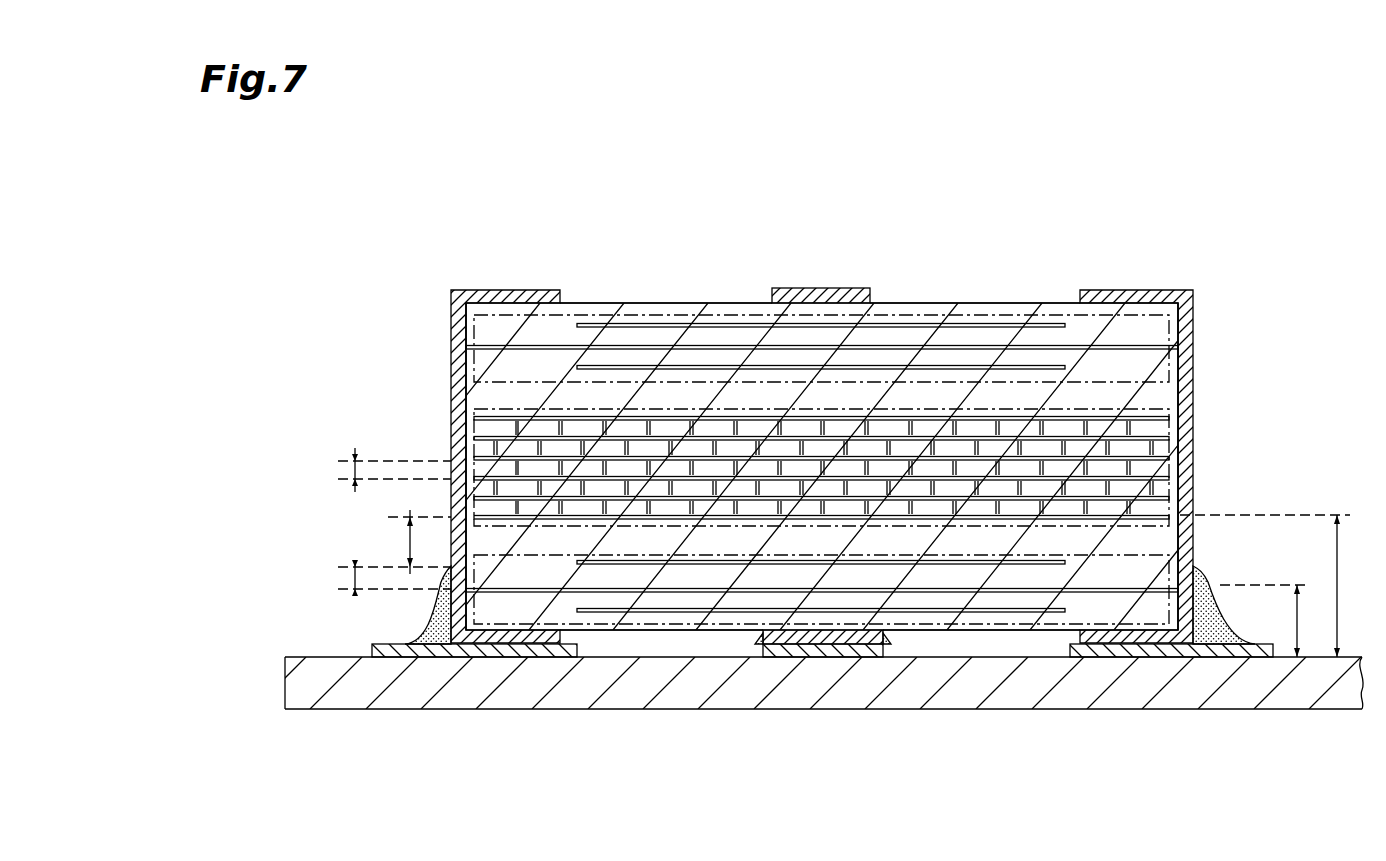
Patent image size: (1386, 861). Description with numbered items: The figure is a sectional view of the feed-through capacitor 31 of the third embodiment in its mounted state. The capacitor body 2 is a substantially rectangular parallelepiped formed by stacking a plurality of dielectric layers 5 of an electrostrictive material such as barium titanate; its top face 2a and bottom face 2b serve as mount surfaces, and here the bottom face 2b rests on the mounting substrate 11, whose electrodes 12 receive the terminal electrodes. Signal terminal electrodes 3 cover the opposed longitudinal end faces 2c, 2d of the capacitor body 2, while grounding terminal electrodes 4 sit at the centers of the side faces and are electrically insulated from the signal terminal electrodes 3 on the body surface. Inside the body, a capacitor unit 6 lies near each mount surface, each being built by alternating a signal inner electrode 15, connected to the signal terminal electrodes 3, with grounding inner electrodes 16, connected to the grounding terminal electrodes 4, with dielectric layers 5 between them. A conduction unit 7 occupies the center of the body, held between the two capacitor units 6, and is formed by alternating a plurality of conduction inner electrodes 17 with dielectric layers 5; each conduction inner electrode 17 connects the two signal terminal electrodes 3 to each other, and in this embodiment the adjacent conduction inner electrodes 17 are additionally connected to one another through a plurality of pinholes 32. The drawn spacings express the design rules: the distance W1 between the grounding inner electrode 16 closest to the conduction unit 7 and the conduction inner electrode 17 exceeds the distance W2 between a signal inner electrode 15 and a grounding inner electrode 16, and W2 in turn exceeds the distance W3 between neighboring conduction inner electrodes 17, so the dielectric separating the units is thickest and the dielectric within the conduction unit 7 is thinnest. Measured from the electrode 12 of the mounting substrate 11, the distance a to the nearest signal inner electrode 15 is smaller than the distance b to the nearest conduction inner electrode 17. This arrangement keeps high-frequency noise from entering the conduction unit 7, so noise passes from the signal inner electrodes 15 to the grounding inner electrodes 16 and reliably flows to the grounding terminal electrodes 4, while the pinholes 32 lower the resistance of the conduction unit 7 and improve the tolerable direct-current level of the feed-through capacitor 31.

The feed-through capacitor 31 is at (468, 257).
The capacitor body 2 is at (822, 493).
The top face 2a is at (920, 303).
The bottom face 2b is at (933, 631).
The end face 2c is at (464, 377).
The end face 2d is at (1180, 374).
The signal terminal electrode 3 is at (458, 338).
The grounding terminal electrode 4 is at (820, 290).
The dielectric layer 5 is at (562, 322).
The capacitor unit 6 is at (1013, 315).
The conduction unit 7 is at (844, 463).
The signal inner electrode 15 is at (680, 346).
The grounding inner electrode 16 is at (628, 366).
The conduction inner electrode 17 is at (478, 455).
The pinhole 32 is at (1172, 458).
The mounting substrate 11 is at (1120, 697).
The electrode 12 is at (388, 644).
The distance W1 is at (408, 542).
The distance W2 is at (374, 578).
The distance W3 is at (374, 470).
The distance a is at (1269, 621).
The distance b is at (1270, 586).